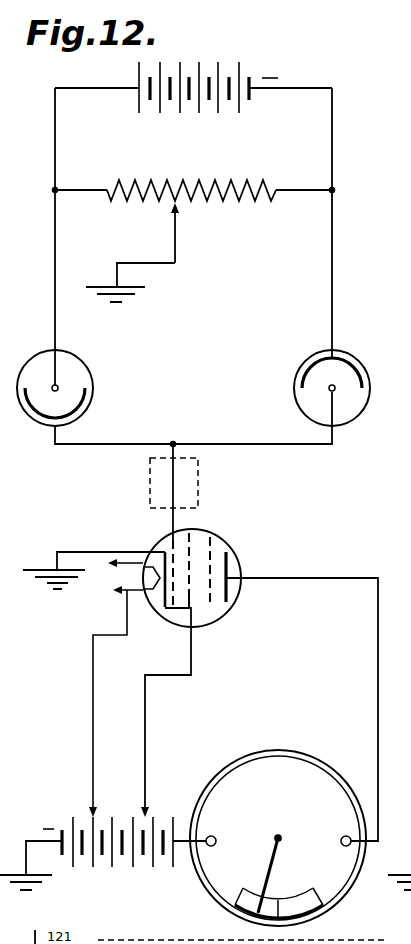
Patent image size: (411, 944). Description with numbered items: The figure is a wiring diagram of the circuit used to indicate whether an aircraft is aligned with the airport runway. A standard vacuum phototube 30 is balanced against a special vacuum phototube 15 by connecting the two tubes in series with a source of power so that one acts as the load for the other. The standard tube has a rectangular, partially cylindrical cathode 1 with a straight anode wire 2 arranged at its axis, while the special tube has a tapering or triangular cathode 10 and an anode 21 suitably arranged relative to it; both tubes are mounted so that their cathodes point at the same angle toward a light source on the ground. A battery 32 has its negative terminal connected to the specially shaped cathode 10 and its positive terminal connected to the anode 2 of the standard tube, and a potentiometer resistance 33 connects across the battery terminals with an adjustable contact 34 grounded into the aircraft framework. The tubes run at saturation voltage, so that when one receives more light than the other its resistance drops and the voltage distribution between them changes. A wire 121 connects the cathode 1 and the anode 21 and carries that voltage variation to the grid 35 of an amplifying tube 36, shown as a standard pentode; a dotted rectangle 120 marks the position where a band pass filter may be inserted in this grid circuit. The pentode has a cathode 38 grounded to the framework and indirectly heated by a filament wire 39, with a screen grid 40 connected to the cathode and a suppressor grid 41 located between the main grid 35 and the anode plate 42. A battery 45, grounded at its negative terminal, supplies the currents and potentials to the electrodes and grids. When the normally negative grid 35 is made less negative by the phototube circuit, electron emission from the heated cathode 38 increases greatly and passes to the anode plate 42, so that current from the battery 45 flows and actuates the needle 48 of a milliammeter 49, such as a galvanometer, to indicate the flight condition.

The cathode 1 is at (84, 408).
The anode wire 2 is at (52, 388).
The tapering cathode 10 is at (320, 377).
The special vacuum phototube 15 is at (292, 391).
The anode 21 is at (326, 391).
The standard vacuum phototube 30 is at (61, 377).
The battery 32 is at (197, 108).
The potentiometer resistance 33 is at (230, 181).
The adjustable contact 34 is at (178, 246).
The grid 35 is at (170, 552).
The amplifying tube 36 is at (215, 534).
The cathode 38 is at (165, 600).
The filament wire 39 is at (143, 578).
The screen grid 40 is at (216, 606).
The suppressor grid 41 is at (192, 600).
The anode plate 42 is at (240, 566).
The battery 45 is at (133, 866).
The needle 48 is at (268, 876).
The milliammeter 49 is at (278, 838).
The dotted rectangle 120 is at (217, 483).
The wire 121 is at (267, 445).